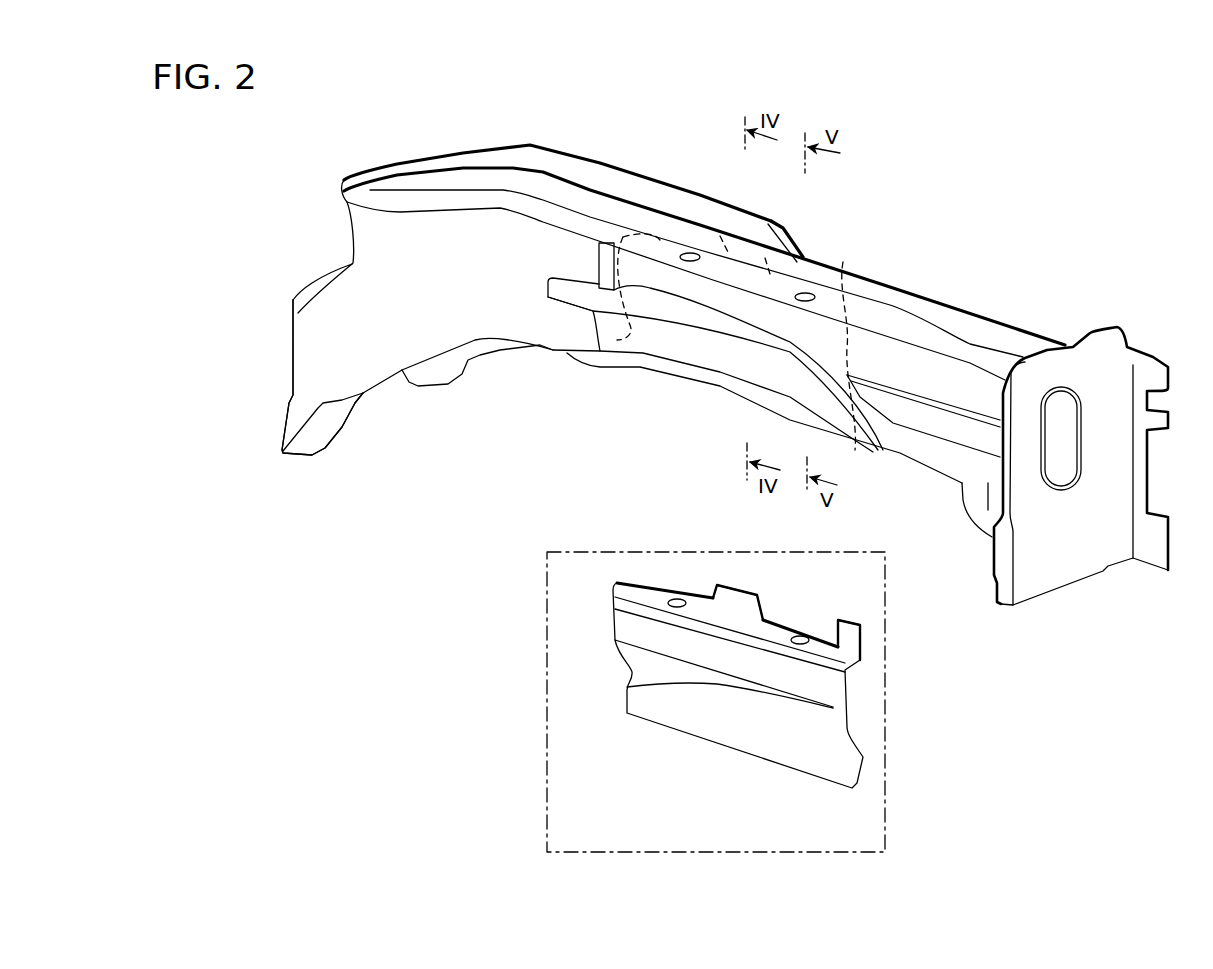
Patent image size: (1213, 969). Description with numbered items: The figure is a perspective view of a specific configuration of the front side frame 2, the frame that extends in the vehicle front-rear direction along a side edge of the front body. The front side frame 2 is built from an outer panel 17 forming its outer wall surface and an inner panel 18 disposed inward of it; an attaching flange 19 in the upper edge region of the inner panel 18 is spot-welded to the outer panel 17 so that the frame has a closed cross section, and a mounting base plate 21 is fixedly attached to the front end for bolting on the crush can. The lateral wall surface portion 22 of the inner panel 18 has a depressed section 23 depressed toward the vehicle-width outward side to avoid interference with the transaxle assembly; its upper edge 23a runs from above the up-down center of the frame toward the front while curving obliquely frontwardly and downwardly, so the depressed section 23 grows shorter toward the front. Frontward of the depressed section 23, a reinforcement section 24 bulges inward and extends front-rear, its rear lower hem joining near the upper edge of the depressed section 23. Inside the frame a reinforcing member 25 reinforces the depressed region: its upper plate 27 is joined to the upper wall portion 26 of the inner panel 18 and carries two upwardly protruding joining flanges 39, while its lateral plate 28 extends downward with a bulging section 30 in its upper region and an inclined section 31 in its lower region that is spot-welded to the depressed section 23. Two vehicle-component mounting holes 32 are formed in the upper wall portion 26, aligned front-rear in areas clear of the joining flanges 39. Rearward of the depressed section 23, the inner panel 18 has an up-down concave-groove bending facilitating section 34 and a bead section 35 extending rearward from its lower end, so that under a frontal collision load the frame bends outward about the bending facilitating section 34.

The front side frame 2 is at (945, 270).
The outer panel 17 is at (771, 220).
The inner panel 18 is at (535, 320).
The attaching flange 19 is at (905, 303).
The mounting base plate 21 is at (1113, 352).
The lateral wall surface portion 22 is at (815, 342).
The depressed section 23 is at (720, 363).
The upper edge 23a is at (710, 308).
The reinforcement section 24 is at (957, 423).
The reinforcing member 25 is at (627, 552).
The upper wall portion 26 is at (982, 353).
The upper plate 27 is at (767, 630).
The lateral plate 28 is at (653, 633).
The bulging section 30 is at (628, 614).
The inclined section 31 is at (820, 707).
The vehicle-component mounting hole 32 is at (692, 253).
The bending facilitating section 34 is at (597, 263).
The bead section 35 is at (548, 276).
The joining flange 39 is at (727, 597).